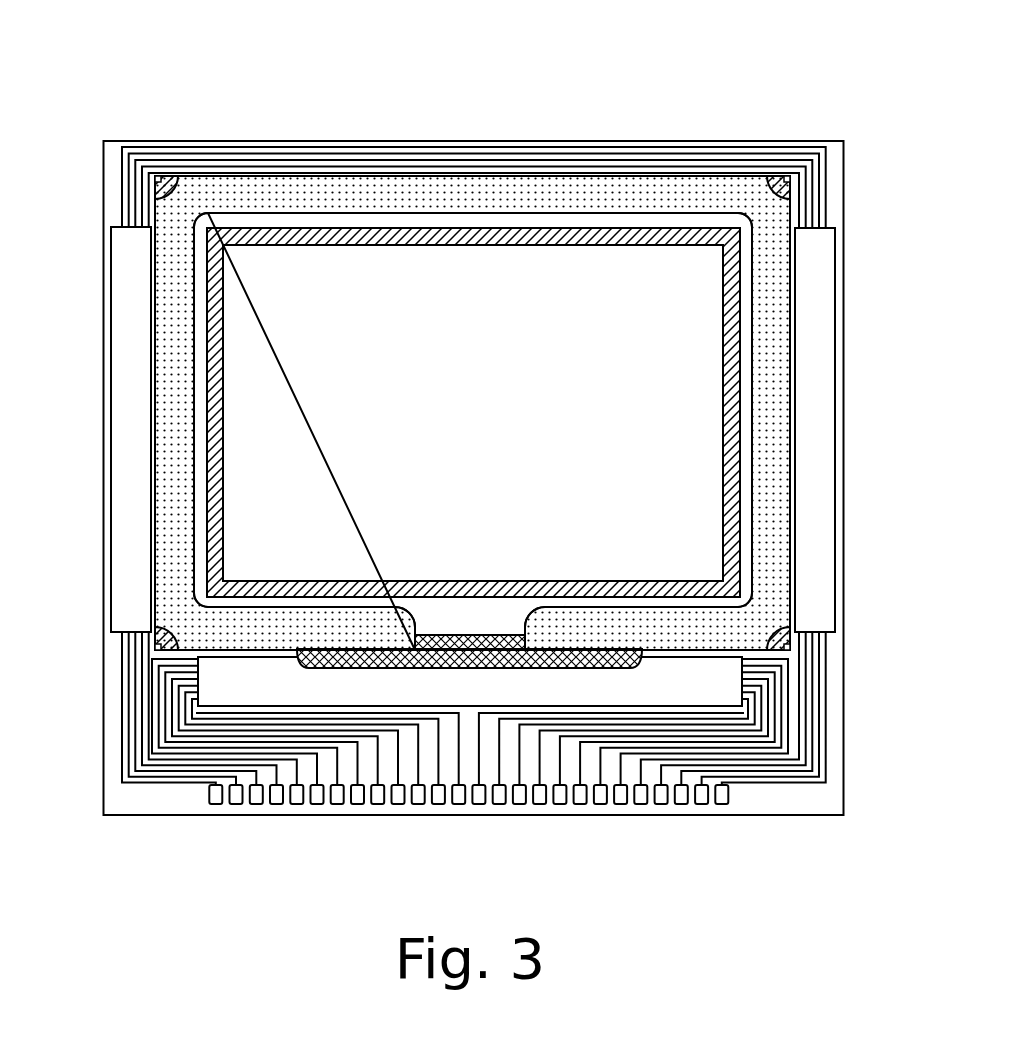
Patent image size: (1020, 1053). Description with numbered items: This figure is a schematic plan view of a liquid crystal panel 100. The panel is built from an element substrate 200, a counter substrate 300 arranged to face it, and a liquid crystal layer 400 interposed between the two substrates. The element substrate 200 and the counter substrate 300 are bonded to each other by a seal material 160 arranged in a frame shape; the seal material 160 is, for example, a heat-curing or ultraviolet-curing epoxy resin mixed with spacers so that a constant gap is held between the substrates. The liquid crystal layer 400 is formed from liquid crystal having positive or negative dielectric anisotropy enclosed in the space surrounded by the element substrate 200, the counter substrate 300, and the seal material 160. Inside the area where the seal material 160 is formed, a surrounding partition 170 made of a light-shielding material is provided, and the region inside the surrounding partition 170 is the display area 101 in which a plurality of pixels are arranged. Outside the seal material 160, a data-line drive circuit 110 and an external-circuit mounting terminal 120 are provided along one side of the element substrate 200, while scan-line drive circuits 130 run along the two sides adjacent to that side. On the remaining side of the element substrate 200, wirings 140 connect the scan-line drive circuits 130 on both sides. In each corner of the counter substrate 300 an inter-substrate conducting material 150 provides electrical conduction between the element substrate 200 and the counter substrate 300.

The liquid crystal panel 100 is at (584, 67).
The display area 101 is at (643, 442).
The data-line drive circuit 110 is at (468, 683).
The external-circuit mounting terminal 120 is at (377, 805).
The scan-line drive circuit 130 is at (113, 497).
The wiring 140 is at (283, 147).
The inter-substrate conducting material 150 is at (158, 178).
The seal material 160 is at (782, 346).
The surrounding partition 170 is at (724, 357).
The element substrate 200 is at (410, 141).
The counter substrate 300 is at (515, 184).
The liquid crystal layer 400 is at (585, 285).